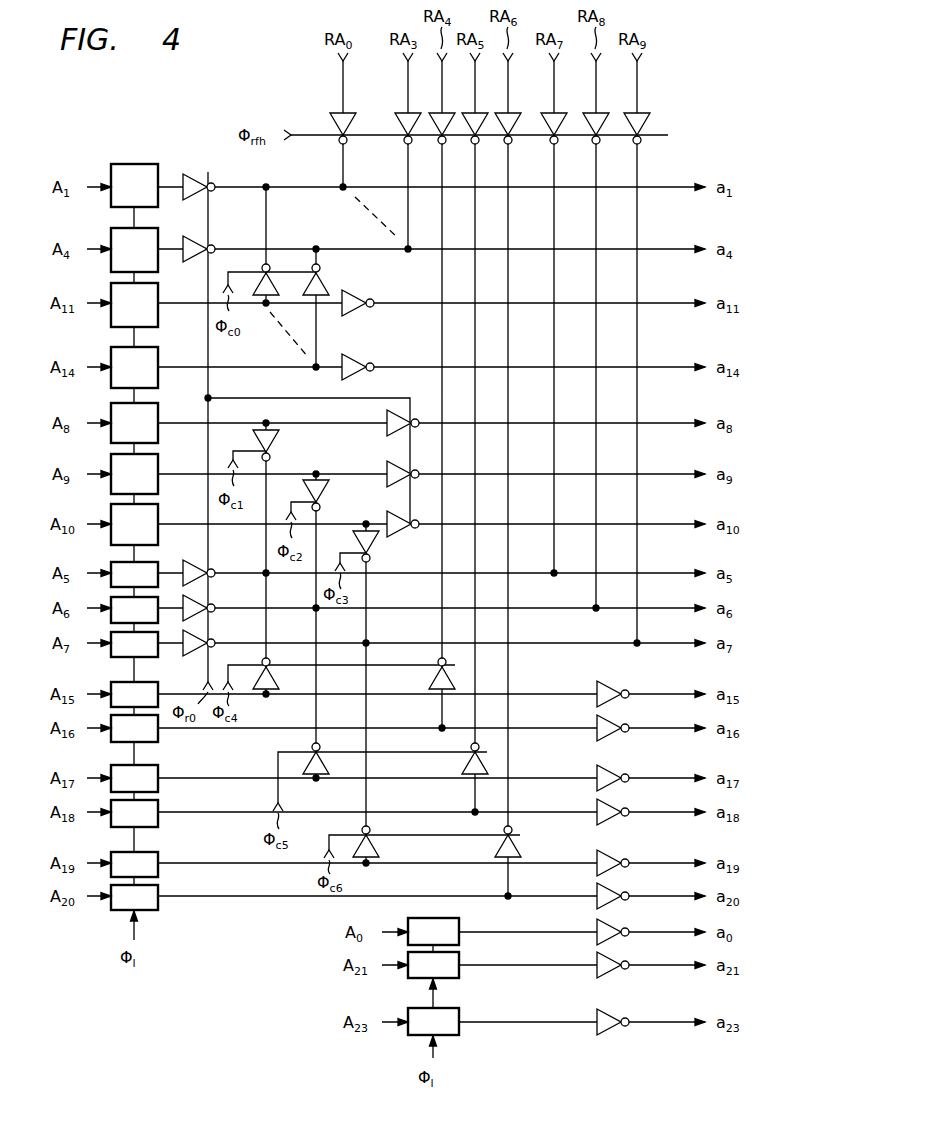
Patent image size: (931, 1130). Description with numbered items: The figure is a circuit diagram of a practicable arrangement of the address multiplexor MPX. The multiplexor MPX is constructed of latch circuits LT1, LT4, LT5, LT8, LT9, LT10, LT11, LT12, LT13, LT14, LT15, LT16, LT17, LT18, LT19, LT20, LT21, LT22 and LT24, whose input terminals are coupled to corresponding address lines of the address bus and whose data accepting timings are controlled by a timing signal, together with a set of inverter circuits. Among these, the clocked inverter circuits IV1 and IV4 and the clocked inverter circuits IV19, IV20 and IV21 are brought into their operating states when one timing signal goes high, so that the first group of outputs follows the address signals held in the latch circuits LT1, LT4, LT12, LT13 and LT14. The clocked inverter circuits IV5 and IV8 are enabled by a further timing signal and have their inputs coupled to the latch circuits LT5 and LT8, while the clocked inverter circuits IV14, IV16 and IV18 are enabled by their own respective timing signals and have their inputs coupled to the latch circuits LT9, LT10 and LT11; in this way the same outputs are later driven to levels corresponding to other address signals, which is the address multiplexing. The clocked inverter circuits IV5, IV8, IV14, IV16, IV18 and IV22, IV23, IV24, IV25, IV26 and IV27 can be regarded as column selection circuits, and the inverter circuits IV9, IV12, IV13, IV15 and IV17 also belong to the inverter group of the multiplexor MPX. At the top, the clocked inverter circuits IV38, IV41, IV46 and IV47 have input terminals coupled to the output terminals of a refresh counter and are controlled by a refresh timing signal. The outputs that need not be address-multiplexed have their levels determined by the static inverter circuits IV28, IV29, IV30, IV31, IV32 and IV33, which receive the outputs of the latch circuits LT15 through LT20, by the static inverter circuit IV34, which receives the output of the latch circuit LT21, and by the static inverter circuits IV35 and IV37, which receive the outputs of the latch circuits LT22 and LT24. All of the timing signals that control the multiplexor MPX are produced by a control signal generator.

The clocked inverter circuit IV1 is at (194, 173).
The clocked inverter circuit IV4 is at (202, 238).
The clocked inverter circuit IV5 is at (270, 262).
The clocked inverter circuit IV8 is at (328, 285).
The inverter circuit IV9 is at (365, 299).
The inverter circuit IV12 is at (363, 362).
The clocked inverter circuit IV13 is at (414, 411).
The clocked inverter circuit IV14 is at (279, 442).
The clocked inverter circuit IV15 is at (390, 464).
The clocked inverter circuit IV16 is at (328, 493).
The clocked inverter circuit IV17 is at (398, 537).
The clocked inverter circuit IV18 is at (378, 548).
The clocked inverter circuit IV19 is at (204, 566).
The clocked inverter circuit IV20 is at (204, 602).
The clocked inverter circuit IV21 is at (204, 639).
The clocked inverter circuit IV22 is at (264, 690).
The clocked inverter circuit IV23 is at (430, 679).
The clocked inverter circuit IV24 is at (313, 778).
The clocked inverter circuit IV25 is at (463, 768).
The clocked inverter circuit IV26 is at (378, 845).
The clocked inverter circuit IV27 is at (516, 845).
The static inverter circuit IV28 is at (609, 689).
The static inverter circuit IV29 is at (611, 725).
The static inverter circuit IV30 is at (609, 774).
The static inverter circuit IV31 is at (621, 800).
The static inverter circuit IV32 is at (609, 858).
The static inverter circuit IV33 is at (611, 892).
The static inverter circuit IV34 is at (609, 928).
The static inverter circuit IV35 is at (611, 962).
The static inverter circuit IV37 is at (609, 1017).
The clocked inverter circuit IV38 is at (336, 113).
The clocked inverter circuit IV41 is at (400, 113).
The clocked inverter circuit IV46 is at (602, 112).
The clocked inverter circuit IV47 is at (644, 112).
The latch circuit LT1 is at (134, 185).
The latch circuit LT4 is at (134, 250).
The latch circuit LT5 is at (134, 305).
The latch circuit LT8 is at (134, 367).
The latch circuit LT9 is at (134, 423).
The latch circuit LT10 is at (134, 474).
The latch circuit LT11 is at (134, 524).
The latch circuit LT12 is at (134, 574).
The latch circuit LT13 is at (134, 610).
The latch circuit LT14 is at (134, 644).
The latch circuit LT15 is at (134, 694).
The latch circuit LT16 is at (134, 728).
The latch circuit LT17 is at (134, 778).
The latch circuit LT18 is at (134, 813).
The latch circuit LT19 is at (134, 864).
The latch circuit LT20 is at (134, 897).
The latch circuit LT21 is at (433, 931).
The latch circuit LT22 is at (433, 965).
The latch circuit LT24 is at (433, 1021).
The multiplexor MPX is at (238, 926).